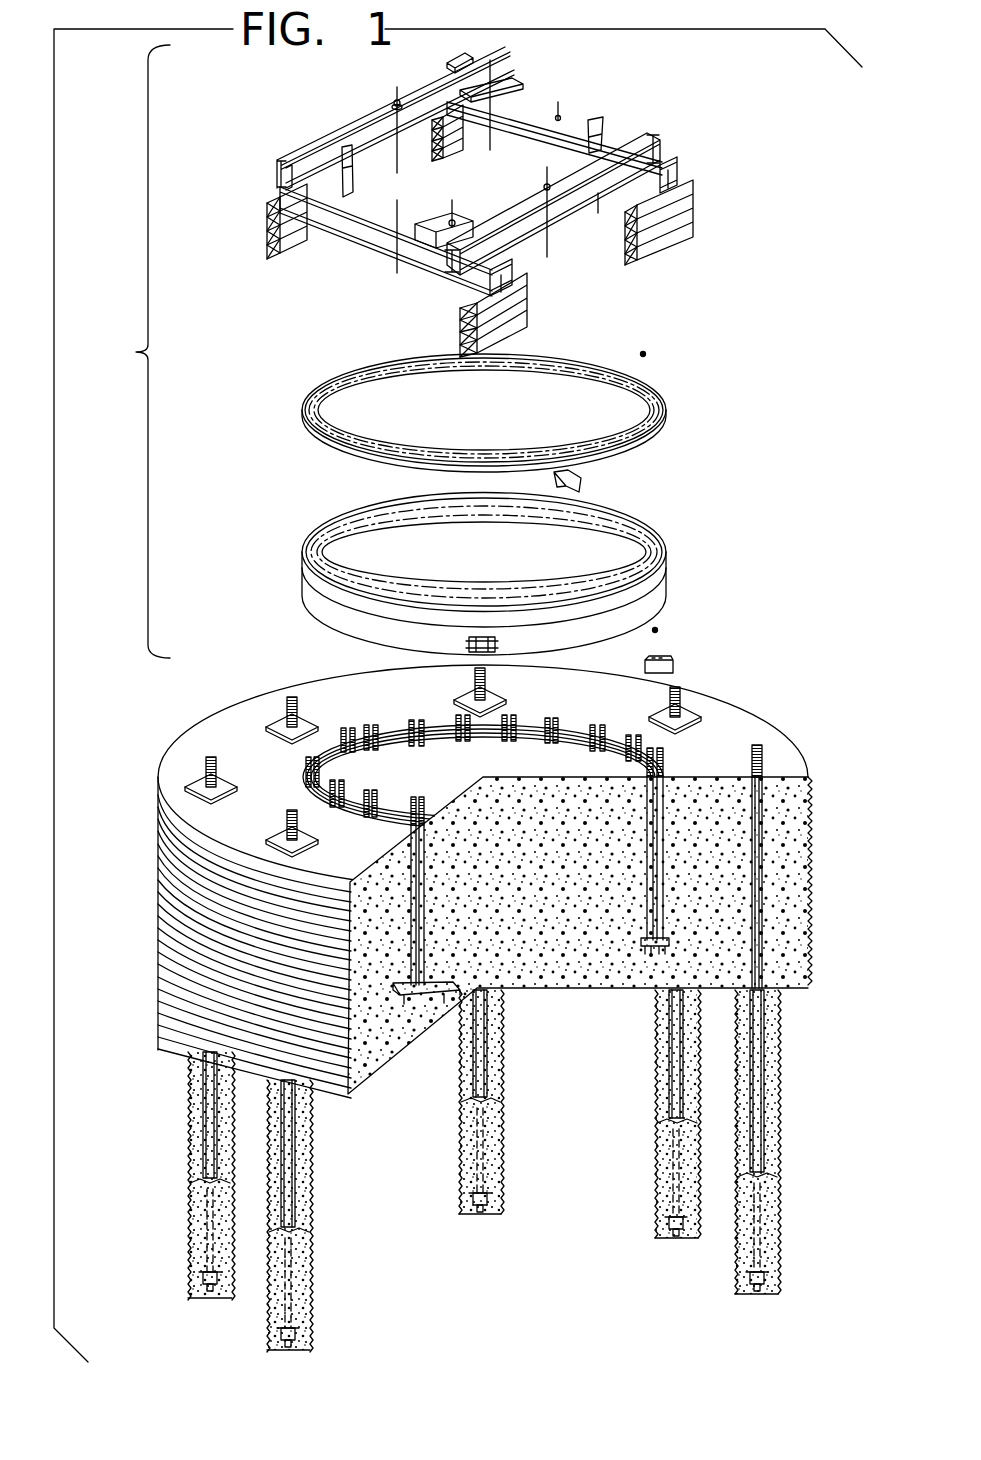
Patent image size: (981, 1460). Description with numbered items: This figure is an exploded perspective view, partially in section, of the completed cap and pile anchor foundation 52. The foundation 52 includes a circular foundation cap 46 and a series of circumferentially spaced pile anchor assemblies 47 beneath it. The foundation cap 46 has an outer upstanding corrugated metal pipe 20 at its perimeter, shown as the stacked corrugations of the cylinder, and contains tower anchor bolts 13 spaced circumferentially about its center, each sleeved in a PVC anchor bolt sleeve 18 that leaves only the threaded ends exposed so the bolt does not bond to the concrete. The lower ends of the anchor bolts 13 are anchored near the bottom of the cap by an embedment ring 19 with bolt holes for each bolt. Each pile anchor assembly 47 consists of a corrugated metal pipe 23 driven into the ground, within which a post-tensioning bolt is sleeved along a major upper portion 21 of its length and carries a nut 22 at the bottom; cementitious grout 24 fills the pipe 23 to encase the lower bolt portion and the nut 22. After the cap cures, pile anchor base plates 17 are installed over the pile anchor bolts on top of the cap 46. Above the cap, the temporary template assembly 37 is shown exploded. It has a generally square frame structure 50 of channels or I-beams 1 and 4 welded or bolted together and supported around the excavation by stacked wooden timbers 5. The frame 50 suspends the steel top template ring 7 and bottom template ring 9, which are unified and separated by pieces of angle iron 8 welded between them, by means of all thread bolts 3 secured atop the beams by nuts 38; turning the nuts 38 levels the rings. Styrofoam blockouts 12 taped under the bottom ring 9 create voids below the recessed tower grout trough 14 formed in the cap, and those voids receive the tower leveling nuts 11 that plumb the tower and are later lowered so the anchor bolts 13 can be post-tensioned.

The channel or I-beam 1 is at (503, 45).
The all thread bolt 3 is at (394, 97).
The nut 38 is at (392, 106).
The frame structure 50 is at (283, 160).
The wooden timber 5 is at (693, 181).
The channel or I-beam 4 is at (350, 232).
The template assembly 37 is at (136, 352).
The top template ring 7 is at (660, 428).
The angle iron 8 is at (583, 480).
The bottom template ring 9 is at (665, 545).
The tower leveling nut 11 is at (660, 630).
The Styrofoam blockout 12 is at (674, 666).
The recessed tower grout trough 14 is at (397, 727).
The pile anchor base plate 17 is at (230, 785).
The tower anchor bolt 13 is at (677, 752).
The anchor bolt sleeve 18 is at (428, 875).
The embedment ring 19 is at (405, 983).
The foundation 52 is at (158, 728).
The foundation cap 46 is at (156, 880).
The outer corrugated metal pipe 20 is at (813, 883).
The PVC sleeve portion 21 is at (760, 1142).
The nut 22 is at (742, 1268).
The pile anchor assembly 47 is at (250, 1202).
The pile anchor corrugated metal pipe 23 is at (330, 1216).
The pile anchor grout 24 is at (308, 1314).